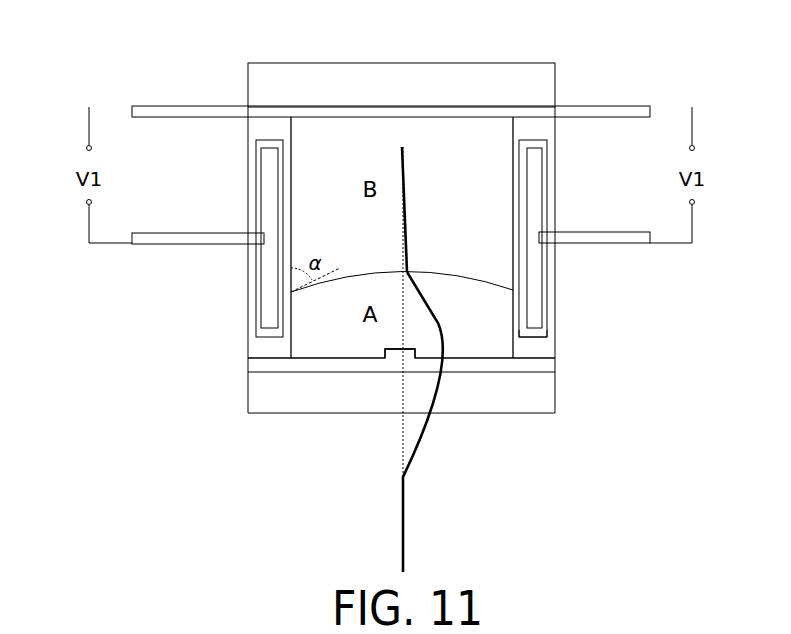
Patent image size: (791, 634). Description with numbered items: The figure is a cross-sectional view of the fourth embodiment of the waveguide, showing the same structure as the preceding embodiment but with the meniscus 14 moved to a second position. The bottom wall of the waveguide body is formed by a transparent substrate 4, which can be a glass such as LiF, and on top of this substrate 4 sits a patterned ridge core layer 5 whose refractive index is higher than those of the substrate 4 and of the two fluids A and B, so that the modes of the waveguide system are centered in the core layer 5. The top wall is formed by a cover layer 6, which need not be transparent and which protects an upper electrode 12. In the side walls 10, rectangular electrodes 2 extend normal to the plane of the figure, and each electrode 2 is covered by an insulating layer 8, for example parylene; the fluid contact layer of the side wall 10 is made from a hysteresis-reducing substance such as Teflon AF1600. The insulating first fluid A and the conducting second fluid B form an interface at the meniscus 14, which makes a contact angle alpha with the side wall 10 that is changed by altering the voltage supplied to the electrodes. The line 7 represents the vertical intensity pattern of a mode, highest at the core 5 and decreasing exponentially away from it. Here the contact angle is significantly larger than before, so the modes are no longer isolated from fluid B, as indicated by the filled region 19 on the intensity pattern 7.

The electrode 2 is at (533, 178).
The transparent substrate 4 is at (295, 398).
The patterned core layer 5 is at (397, 365).
The cover layer 6 is at (334, 80).
The line (vertical intensity pattern) 7 is at (403, 562).
The insulating layer 8 is at (540, 332).
The side wall (fluid contact layer) 10 is at (545, 347).
The upper electrode 12 is at (612, 110).
The meniscus 14 is at (403, 227).
The filled region 19 is at (405, 270).